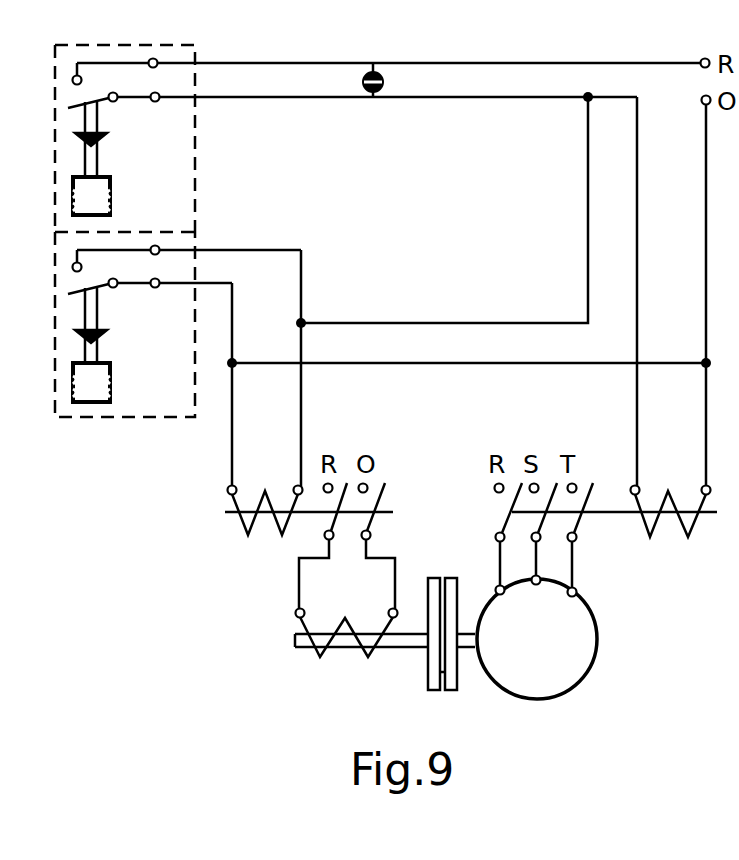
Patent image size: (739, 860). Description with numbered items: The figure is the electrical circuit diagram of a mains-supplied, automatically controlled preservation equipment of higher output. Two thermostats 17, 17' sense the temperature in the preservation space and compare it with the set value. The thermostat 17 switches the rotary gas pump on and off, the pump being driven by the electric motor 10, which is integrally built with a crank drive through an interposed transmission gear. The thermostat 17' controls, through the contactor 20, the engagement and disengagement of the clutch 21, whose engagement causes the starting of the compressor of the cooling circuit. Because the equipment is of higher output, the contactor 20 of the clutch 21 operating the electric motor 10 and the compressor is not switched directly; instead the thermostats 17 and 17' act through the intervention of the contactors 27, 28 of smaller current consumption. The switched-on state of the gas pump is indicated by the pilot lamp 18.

The motor 10 is at (562, 673).
The thermostat 17 is at (380, 138).
The thermostat 17' is at (178, 360).
The pilot lamp 18 is at (382, 81).
The contactor 20 is at (365, 655).
The clutch 21 is at (433, 666).
The contactor 27 is at (697, 520).
The contactor 28 is at (243, 527).